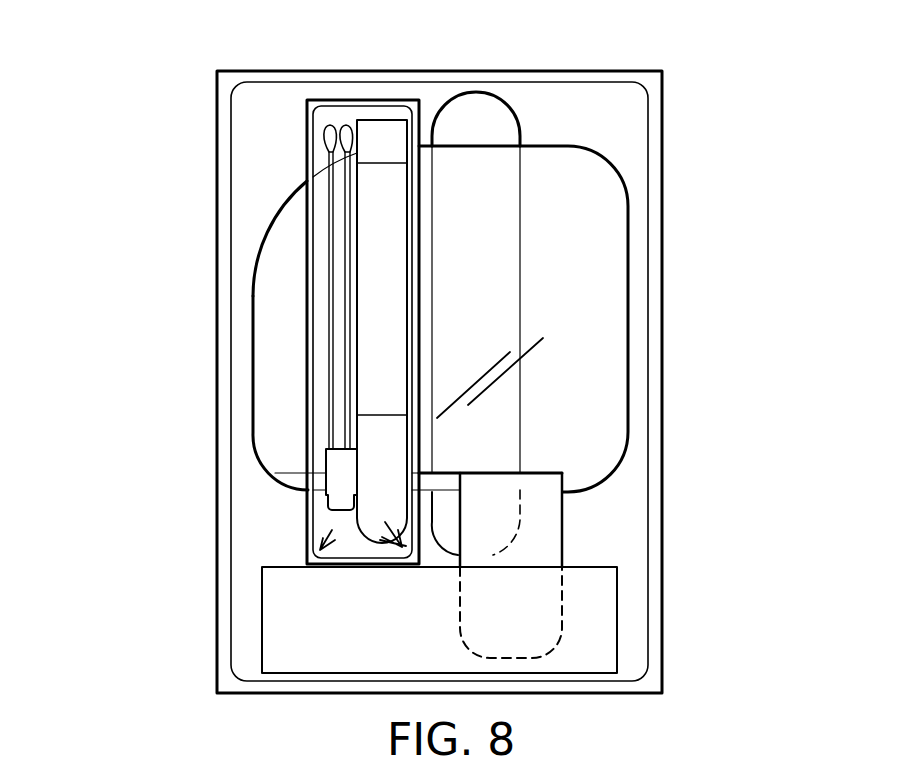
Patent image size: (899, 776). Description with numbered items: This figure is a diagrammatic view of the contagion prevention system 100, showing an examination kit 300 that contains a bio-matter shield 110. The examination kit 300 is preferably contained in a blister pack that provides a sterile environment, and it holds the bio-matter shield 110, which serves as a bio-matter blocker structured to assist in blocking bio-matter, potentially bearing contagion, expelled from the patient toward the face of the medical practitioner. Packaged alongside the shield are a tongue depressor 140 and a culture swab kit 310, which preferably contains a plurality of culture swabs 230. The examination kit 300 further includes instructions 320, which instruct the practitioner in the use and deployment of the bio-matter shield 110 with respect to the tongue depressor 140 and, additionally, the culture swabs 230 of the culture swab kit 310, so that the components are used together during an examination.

The examination kit 300 is at (180, 67).
The contagion prevention system 100 is at (687, 135).
The bio-matter shield 110 is at (628, 245).
The tongue depressor 140 is at (520, 110).
The culture swab kit 310 is at (307, 170).
The culture swabs 230 is at (330, 285).
The instructions 320 is at (617, 607).